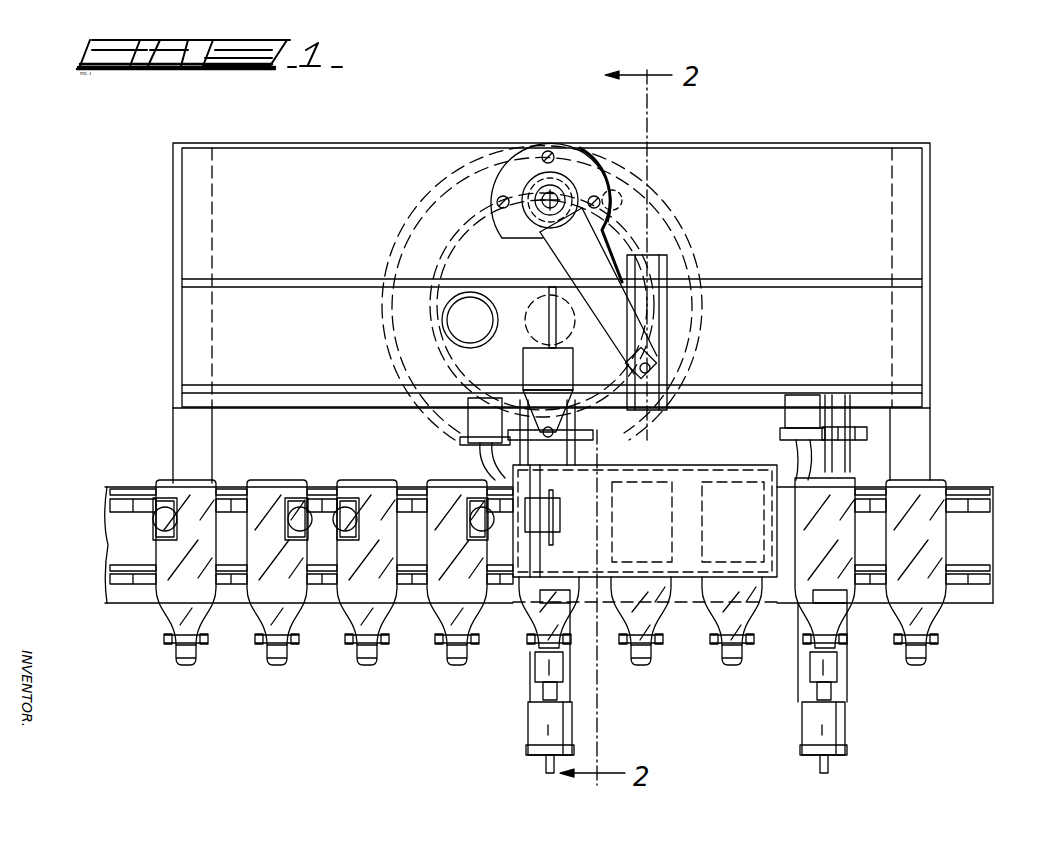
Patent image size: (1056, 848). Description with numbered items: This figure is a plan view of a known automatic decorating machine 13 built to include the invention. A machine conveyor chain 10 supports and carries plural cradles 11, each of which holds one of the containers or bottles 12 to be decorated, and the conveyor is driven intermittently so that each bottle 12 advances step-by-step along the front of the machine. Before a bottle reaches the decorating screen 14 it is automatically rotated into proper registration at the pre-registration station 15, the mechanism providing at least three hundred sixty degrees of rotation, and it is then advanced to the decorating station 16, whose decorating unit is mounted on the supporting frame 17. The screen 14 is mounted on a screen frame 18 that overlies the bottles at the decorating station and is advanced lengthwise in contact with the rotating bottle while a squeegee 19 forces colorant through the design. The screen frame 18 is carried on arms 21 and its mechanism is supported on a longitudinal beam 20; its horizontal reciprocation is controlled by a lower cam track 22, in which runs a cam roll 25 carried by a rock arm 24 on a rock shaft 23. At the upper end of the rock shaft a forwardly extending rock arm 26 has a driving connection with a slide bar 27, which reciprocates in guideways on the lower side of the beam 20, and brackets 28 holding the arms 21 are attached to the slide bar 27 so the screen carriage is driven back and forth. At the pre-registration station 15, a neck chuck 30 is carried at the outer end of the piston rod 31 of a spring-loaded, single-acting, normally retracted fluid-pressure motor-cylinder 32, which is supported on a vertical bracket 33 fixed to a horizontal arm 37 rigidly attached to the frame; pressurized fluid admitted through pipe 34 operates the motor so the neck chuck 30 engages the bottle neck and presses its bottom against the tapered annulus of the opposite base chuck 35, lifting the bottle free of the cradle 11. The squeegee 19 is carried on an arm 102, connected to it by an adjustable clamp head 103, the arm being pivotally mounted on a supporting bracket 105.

The machine conveyor chain 10 is at (128, 568).
The cradle 11 is at (164, 640).
The bottle 12 is at (182, 590).
The decorating machine 13 is at (160, 361).
The decorating screen 14 is at (740, 536).
The pre-registration station 15 is at (862, 662).
The decorating station 16 is at (588, 662).
The supporting frame 17 is at (181, 318).
The screen frame 18 is at (688, 470).
The squeegee 19 is at (545, 545).
The longitudinal beam 20 is at (770, 248).
The arms 21 is at (480, 455).
The lower cam track 22 is at (447, 206).
The rock shaft 23 is at (552, 196).
The rock arm 24 is at (597, 194).
The cam roll 25 is at (625, 194).
The forwardly extending rock arm 26 is at (575, 252).
The slide bar 27 is at (660, 405).
The brackets 28 is at (470, 420).
The neck chuck 30 is at (543, 668).
The piston rod 31 is at (542, 690).
The motor-cylinder 32 is at (540, 718).
The vertical bracket 33 is at (530, 733).
The pipe 34 is at (545, 766).
The base chuck 35 is at (600, 455).
The horizontal arm 37 is at (538, 622).
The arm 102 is at (552, 560).
The adjustable clamp head 103 is at (558, 512).
The supporting bracket 105 is at (562, 374).